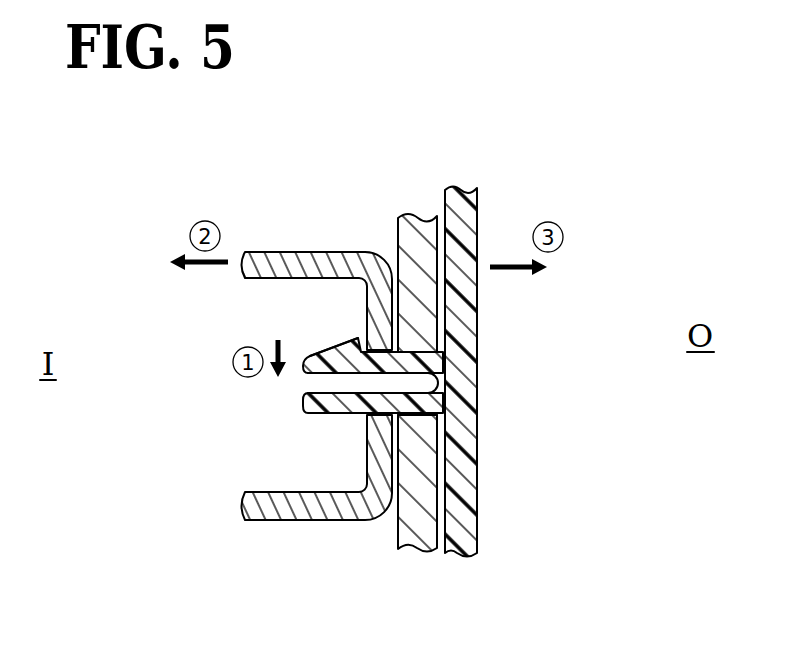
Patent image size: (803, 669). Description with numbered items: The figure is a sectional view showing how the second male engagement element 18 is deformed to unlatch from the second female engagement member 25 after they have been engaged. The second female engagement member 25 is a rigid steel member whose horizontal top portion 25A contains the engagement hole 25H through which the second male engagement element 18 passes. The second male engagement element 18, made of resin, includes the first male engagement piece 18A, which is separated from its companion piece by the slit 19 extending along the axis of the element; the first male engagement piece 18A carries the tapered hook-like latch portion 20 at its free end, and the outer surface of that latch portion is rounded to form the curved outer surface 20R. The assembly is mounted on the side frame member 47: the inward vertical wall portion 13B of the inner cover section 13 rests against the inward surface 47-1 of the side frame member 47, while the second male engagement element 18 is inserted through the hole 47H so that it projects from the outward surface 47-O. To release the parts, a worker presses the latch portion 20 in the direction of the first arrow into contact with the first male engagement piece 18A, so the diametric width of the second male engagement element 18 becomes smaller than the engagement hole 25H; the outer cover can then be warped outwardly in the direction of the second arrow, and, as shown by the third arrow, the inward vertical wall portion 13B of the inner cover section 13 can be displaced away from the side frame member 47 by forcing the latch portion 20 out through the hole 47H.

The second female engagement member 25 is at (273, 252).
The horizontal top portion 25A is at (363, 303).
The engagement hole 25H is at (372, 413).
The tapered hook-like latch portion 20 is at (325, 350).
The curved outer surface 20R is at (352, 338).
The slit 19 is at (335, 389).
The second male engagement element 18 is at (315, 417).
The first male engagement piece 18A is at (347, 416).
The side frame member 47 is at (397, 233).
The hole 47H is at (445, 398).
The inward surface 47-1 is at (398, 532).
The outward surface 47-O is at (440, 497).
The inner cover section 13 is at (478, 373).
The inward vertical wall portion 13B is at (480, 455).